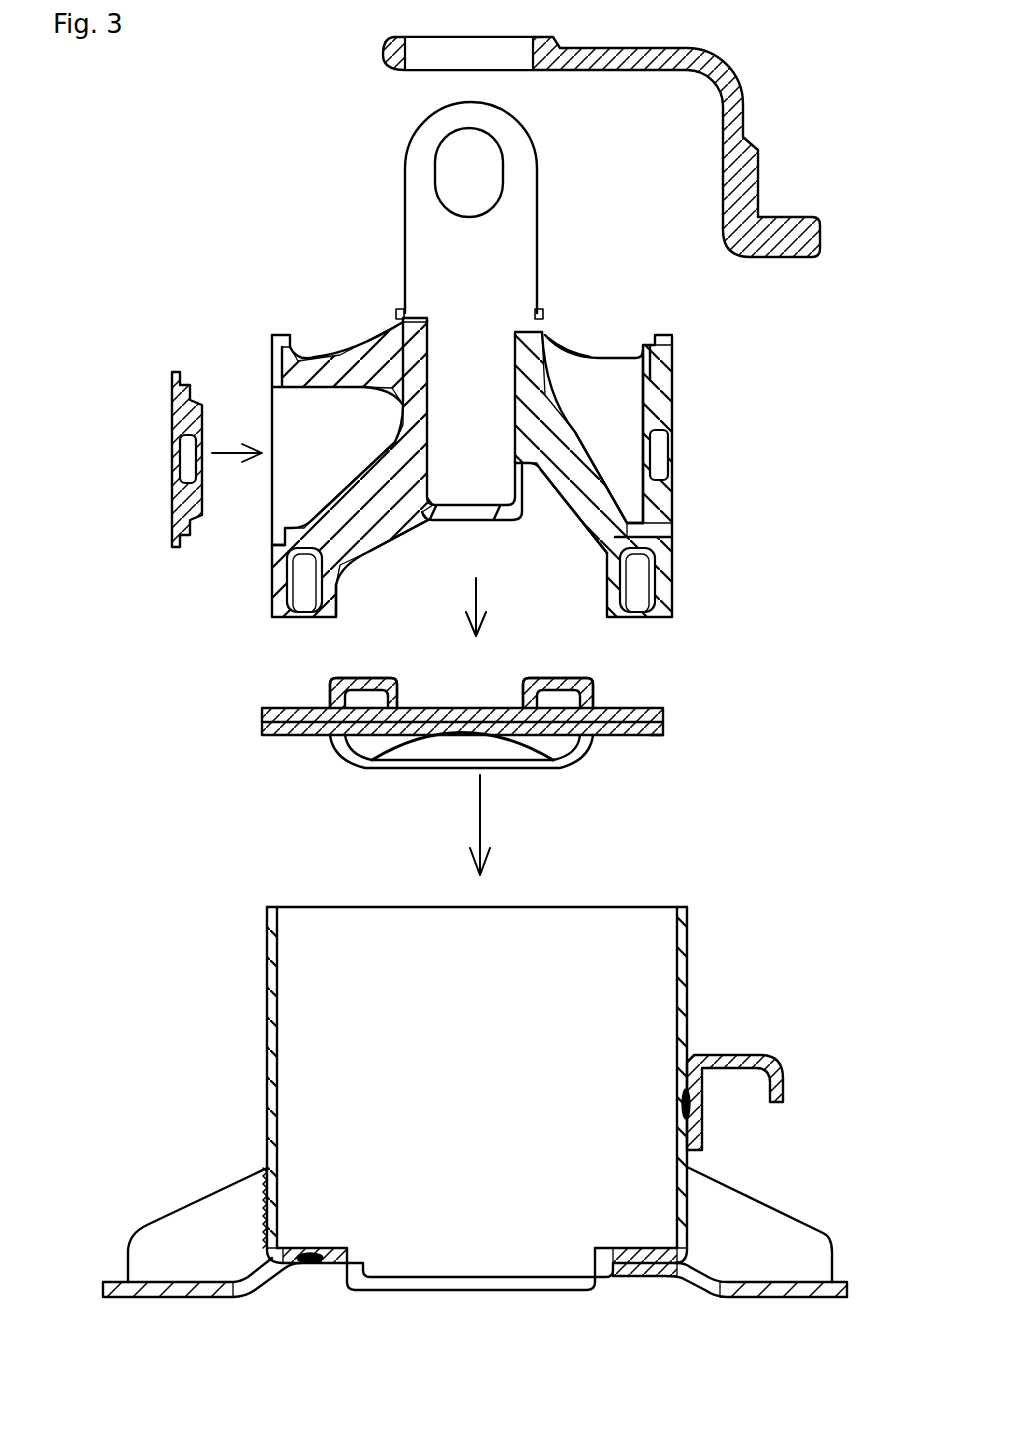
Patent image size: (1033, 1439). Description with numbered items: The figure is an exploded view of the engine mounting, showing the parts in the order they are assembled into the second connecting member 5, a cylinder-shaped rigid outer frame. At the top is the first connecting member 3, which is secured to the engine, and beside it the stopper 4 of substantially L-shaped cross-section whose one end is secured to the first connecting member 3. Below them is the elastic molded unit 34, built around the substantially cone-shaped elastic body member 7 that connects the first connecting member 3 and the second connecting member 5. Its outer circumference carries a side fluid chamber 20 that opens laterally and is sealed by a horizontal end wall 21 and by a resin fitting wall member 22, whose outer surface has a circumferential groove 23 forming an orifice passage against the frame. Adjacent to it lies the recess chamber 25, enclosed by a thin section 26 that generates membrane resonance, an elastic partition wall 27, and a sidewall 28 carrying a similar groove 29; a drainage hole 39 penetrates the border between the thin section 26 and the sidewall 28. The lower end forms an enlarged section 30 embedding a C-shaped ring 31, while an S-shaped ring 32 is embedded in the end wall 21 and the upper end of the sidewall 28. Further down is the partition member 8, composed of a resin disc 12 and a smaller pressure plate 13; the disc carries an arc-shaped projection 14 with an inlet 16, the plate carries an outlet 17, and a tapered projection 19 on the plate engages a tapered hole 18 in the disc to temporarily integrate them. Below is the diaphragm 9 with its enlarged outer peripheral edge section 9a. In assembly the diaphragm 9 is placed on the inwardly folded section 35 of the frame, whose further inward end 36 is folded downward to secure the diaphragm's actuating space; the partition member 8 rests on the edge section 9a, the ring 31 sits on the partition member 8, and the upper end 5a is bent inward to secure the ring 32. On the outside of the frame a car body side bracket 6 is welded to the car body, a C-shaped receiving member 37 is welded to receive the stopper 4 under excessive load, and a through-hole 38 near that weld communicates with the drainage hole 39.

The first connecting member 3 is at (523, 182).
The stopper 4 is at (720, 75).
The second connecting member 5 is at (475, 1086).
The upper end of the second connecting member 5a is at (270, 905).
The car body side bracket 6 is at (182, 1222).
The elastic body member 7 is at (372, 553).
The partition member 8 is at (521, 723).
The diaphragm 9 is at (537, 778).
The outer peripheral edge section of the diaphragm 9a is at (655, 738).
The resin disc 12 is at (648, 708).
The pressure plate 13 is at (650, 724).
The arc-shaped projection 14 is at (572, 678).
The inlet 16 is at (372, 678).
The outlet 17 is at (557, 725).
The tapered hole 18 is at (447, 710).
The tapered projection 19 is at (467, 710).
The side fluid chamber 20 is at (476, 462).
The end wall 21 is at (357, 345).
The fitting wall member 22 is at (182, 459).
The groove 23 is at (173, 457).
The recess chamber 25 is at (602, 367).
The thin section 26 is at (575, 500).
The elastic partition wall 27 is at (578, 358).
The sidewall 28 is at (678, 400).
The groove 29 is at (668, 452).
The enlarged section 30 is at (272, 585).
The ring 31 is at (293, 612).
The ring 32 is at (270, 347).
The elastic molded unit 34 is at (284, 234).
The inwardly folded section 35 is at (647, 1253).
The inward end 36 is at (592, 1286).
The receiving member 37 is at (770, 1052).
The through-hole 38 is at (677, 1128).
The drainage hole 39 is at (663, 522).